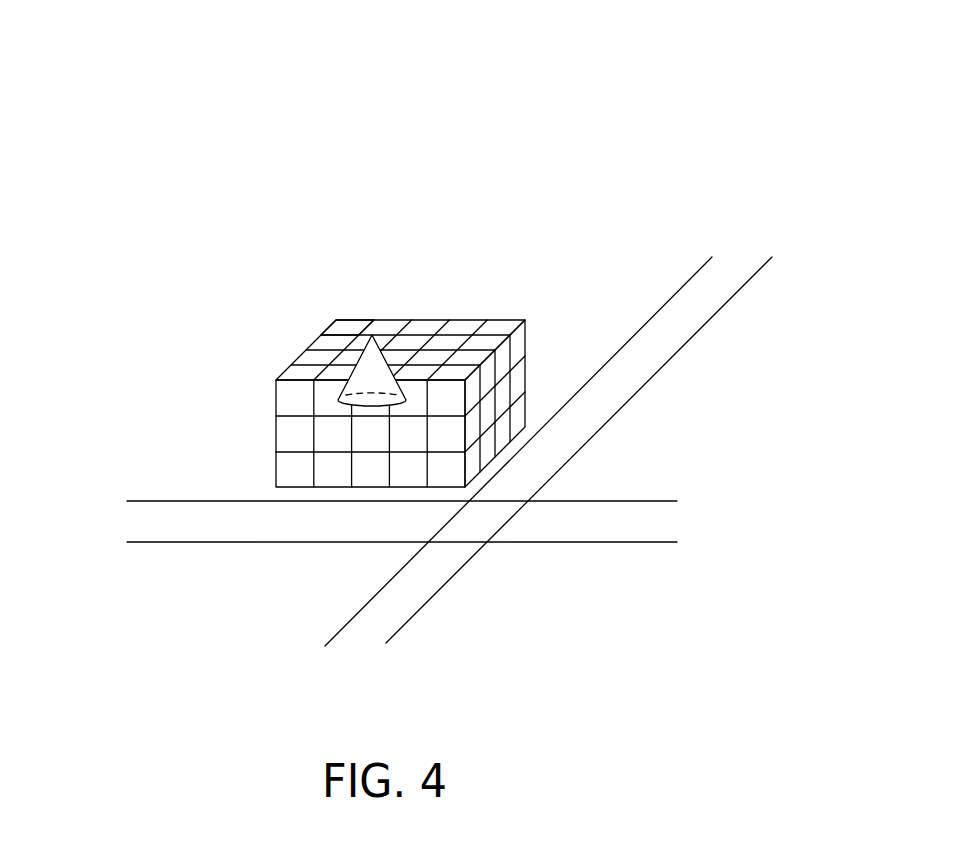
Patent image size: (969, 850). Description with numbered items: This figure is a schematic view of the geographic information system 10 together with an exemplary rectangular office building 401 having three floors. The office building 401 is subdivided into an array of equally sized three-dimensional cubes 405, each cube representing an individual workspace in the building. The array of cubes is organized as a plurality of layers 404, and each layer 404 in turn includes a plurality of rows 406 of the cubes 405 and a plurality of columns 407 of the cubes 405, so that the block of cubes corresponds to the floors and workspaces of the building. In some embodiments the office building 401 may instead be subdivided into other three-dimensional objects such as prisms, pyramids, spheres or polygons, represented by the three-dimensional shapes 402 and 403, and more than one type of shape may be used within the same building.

The geographic information system 10 is at (473, 335).
The office building 401 is at (432, 324).
The three-dimensional shape 402 is at (362, 372).
The three-dimensional shape 403 is at (290, 390).
The layers 404 is at (277, 473).
The cubes 405 is at (352, 327).
The rows 406 is at (407, 485).
The columns 407 is at (488, 467).